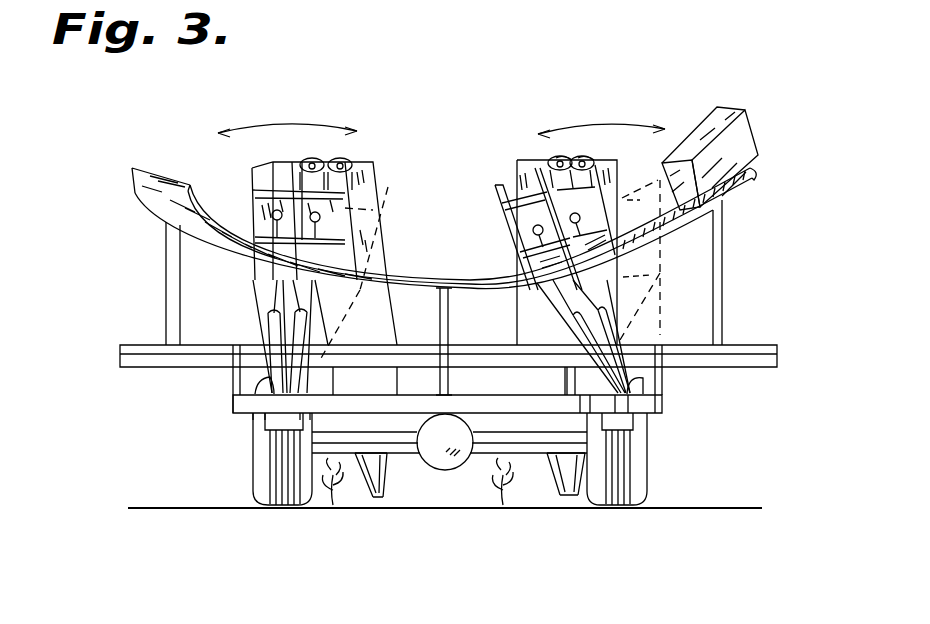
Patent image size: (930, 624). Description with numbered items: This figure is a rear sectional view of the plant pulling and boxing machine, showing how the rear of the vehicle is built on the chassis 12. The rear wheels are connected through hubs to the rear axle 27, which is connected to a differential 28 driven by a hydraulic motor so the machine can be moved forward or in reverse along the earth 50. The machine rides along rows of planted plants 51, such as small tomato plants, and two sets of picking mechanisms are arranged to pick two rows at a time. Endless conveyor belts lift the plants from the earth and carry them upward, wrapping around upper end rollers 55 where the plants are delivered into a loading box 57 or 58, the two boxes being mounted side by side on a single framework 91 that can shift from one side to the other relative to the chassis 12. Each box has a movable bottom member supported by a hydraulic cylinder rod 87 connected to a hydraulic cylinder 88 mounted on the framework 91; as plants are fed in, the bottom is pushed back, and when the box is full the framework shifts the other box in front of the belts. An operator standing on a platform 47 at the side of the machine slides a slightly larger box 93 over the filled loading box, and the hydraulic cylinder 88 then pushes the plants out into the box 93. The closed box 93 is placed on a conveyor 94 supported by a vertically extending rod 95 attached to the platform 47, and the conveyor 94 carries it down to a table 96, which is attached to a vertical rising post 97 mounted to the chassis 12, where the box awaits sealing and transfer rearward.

The chassis 12 is at (660, 403).
The rear axle 27 is at (408, 455).
The differential 28 is at (450, 470).
The platform 47 is at (778, 357).
The earth 50 is at (200, 508).
The plants 51 is at (337, 498).
The upper end rollers 55 is at (650, 480).
The loading box 57 is at (628, 168).
The loading box 58 is at (498, 185).
The hydraulic cylinder rod 87 is at (590, 177).
The hydraulic cylinder 88 is at (587, 358).
The framework 91 is at (615, 343).
The box 93 is at (746, 111).
The conveyor 94 is at (757, 176).
The vertically extending rod 95 is at (723, 276).
The table 96 is at (472, 279).
The vertical rising post 97 is at (449, 324).